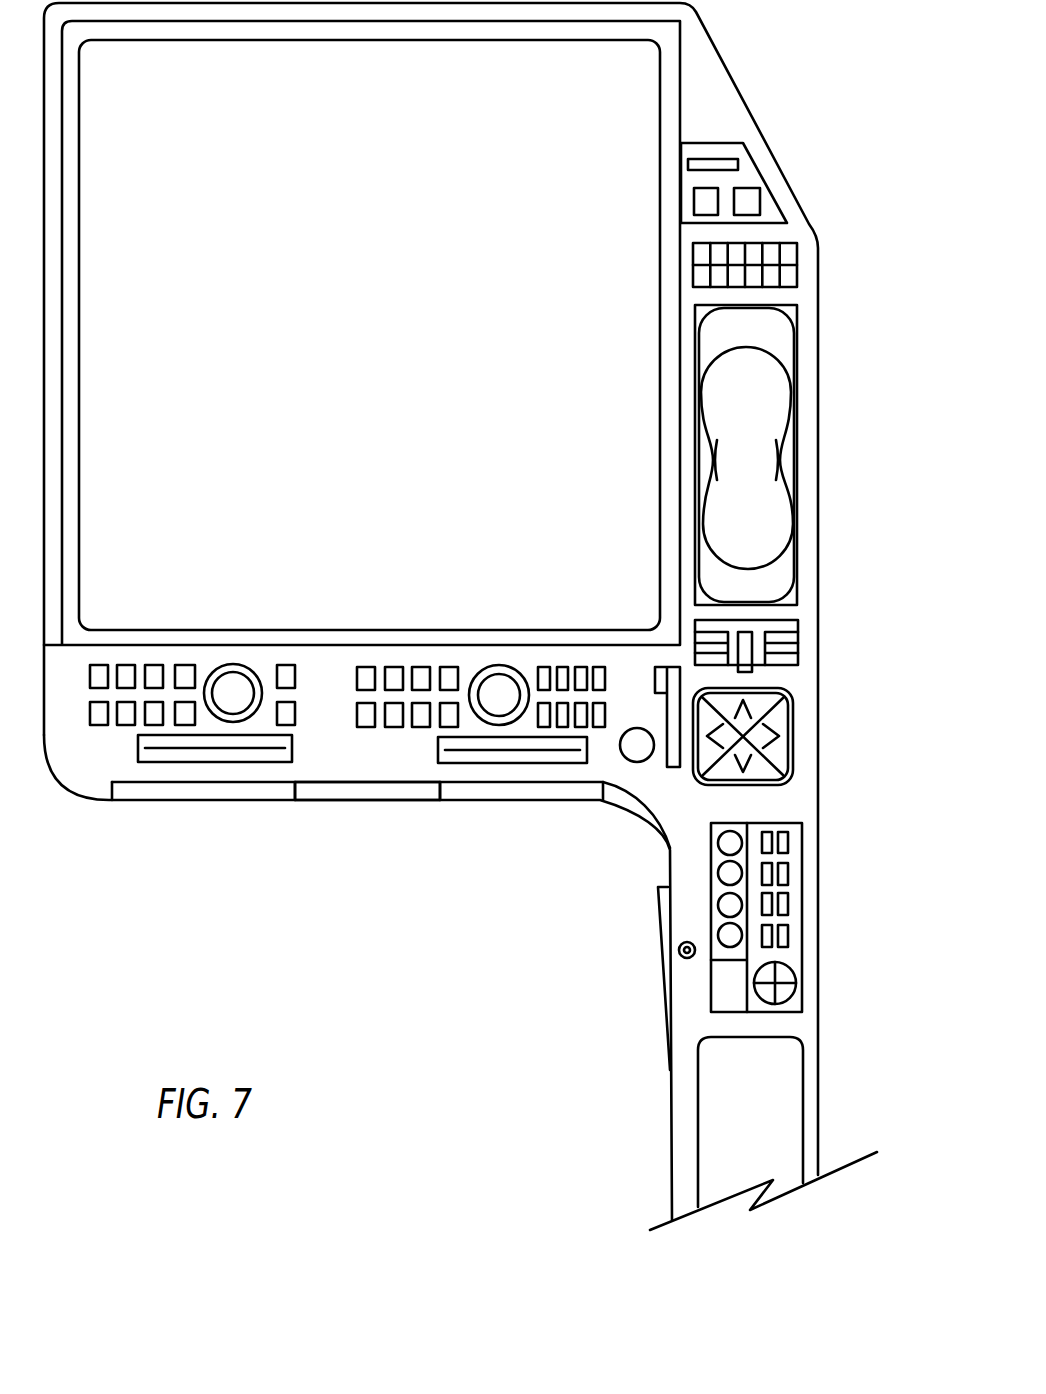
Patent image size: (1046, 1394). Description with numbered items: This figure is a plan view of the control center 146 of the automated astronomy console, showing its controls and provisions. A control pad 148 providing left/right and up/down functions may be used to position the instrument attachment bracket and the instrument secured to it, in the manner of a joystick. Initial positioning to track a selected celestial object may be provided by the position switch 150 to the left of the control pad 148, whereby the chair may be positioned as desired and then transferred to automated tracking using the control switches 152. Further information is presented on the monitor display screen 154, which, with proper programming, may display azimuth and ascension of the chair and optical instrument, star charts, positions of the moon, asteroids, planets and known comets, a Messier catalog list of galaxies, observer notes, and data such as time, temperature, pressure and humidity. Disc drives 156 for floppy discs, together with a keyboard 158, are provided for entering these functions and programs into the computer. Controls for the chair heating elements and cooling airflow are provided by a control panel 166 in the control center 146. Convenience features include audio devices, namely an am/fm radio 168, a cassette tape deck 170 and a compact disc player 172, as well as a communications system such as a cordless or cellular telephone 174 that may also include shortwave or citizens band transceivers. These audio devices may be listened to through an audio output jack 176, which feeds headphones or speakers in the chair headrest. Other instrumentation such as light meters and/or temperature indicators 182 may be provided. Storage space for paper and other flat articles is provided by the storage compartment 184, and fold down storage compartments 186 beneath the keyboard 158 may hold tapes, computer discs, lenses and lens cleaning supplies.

The control center 146 is at (350, 975).
The control pad 148 is at (793, 740).
The position switch 150 is at (634, 764).
The control switches 152 is at (728, 633).
The monitor display screen 154 is at (400, 362).
The disc drives 156 is at (437, 750).
The keyboard 158 is at (90, 737).
The control panel 166 is at (802, 908).
The am/fm radio 168 is at (761, 204).
The cassette tape deck 170 is at (740, 165).
The compact disc player 172 is at (797, 268).
The cordless or cellular telephone 174 is at (780, 460).
The audio output jack 176 is at (678, 952).
The light meter(s) and/or temperature indicator(s) 182 is at (490, 666).
The storage compartment 184 is at (658, 905).
The fold down storage compartments 186 is at (445, 803).